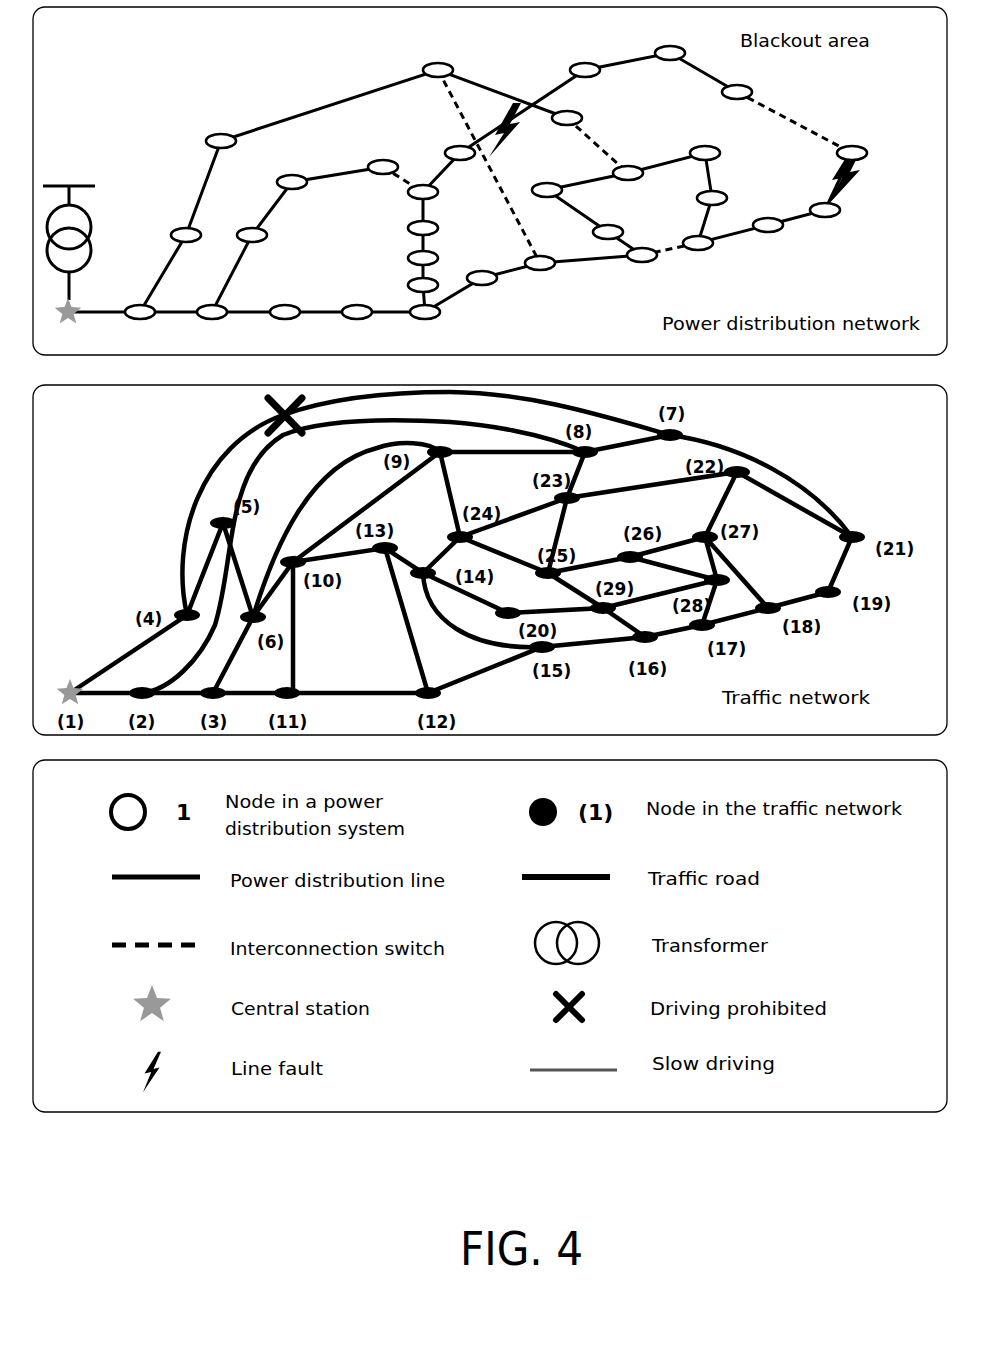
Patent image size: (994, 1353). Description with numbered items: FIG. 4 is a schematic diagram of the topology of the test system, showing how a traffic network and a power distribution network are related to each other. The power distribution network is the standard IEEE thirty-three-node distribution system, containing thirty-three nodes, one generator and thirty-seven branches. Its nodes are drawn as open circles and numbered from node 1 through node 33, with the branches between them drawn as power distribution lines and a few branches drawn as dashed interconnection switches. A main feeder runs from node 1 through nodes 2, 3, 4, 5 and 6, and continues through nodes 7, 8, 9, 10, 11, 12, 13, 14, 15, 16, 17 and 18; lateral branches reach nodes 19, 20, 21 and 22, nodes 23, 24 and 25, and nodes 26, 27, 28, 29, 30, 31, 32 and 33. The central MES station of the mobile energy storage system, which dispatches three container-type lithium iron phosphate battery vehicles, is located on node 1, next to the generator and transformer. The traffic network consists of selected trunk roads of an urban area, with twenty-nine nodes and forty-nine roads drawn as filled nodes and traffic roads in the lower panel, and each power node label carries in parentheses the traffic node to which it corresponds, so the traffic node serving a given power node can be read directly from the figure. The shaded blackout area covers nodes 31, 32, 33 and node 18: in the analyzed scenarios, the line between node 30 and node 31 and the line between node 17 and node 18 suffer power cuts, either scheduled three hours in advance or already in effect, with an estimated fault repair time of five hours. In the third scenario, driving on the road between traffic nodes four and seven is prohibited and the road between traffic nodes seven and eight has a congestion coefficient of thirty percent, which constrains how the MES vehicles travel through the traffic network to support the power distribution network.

The power distribution network node 1 is at (69, 324).
The power distribution network node 2 is at (140, 327).
The power distribution network node 3 is at (212, 327).
The power distribution network node 4 is at (285, 327).
The power distribution network node 5 is at (357, 327).
The power distribution network node 6 is at (433, 327).
The power distribution network node 7 is at (483, 295).
The power distribution network node 8 is at (567, 285).
The power distribution network node 9 is at (658, 273).
The power distribution network node 10 is at (631, 220).
The power distribution network node 11 is at (554, 178).
The power distribution network node 12 is at (644, 160).
The power distribution network node 13 is at (719, 145).
The power distribution network node 14 is at (748, 197).
The power distribution network node 15 is at (727, 258).
The power distribution network node 16 is at (797, 239).
The power distribution network node 17 is at (868, 216).
The power distribution network node 18 is at (885, 167).
The power distribution network node 19 is at (152, 237).
The power distribution network node 20 is at (184, 144).
The power distribution network node 21 is at (406, 62).
The power distribution network node 22 is at (593, 109).
The power distribution network node 23 is at (278, 248).
The power distribution network node 24 is at (255, 192).
The power distribution network node 25 is at (367, 158).
The power distribution network node 26 is at (410, 290).
The power distribution network node 27 is at (410, 261).
The power distribution network node 28 is at (410, 231).
The power distribution network node 29 is at (385, 198).
The power distribution network node 30 is at (438, 140).
The power distribution network node 31 is at (581, 61).
The power distribution network node 32 is at (668, 43).
The power distribution network node 33 is at (777, 96).